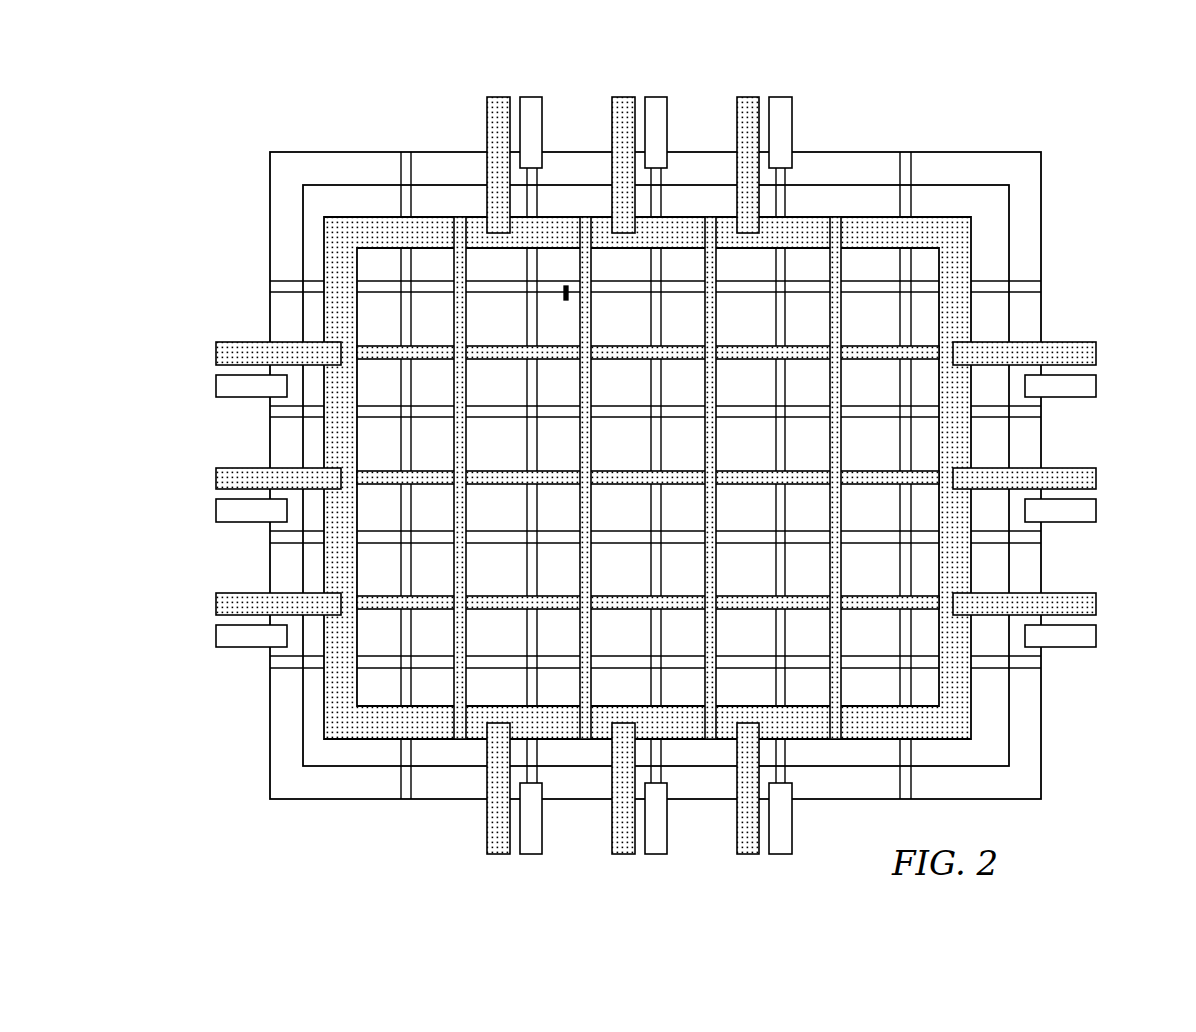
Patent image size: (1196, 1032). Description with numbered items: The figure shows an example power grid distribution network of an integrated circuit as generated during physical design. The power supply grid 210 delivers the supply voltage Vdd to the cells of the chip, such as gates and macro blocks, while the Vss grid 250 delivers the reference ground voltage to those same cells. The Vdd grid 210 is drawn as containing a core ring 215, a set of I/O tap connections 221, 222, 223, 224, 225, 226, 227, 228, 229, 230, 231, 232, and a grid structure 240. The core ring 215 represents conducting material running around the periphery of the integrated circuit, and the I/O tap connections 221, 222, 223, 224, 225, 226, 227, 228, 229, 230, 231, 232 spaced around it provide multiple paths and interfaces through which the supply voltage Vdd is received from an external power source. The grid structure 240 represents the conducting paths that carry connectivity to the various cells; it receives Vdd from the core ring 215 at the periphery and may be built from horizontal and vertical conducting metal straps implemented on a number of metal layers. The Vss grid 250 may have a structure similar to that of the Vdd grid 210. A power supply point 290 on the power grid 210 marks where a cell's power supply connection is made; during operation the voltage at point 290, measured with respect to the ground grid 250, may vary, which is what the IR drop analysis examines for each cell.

The power supply (Vdd) grid 210 is at (1045, 178).
The core ring 215 is at (270, 727).
The I/O tap connection 221 is at (532, 97).
The I/O tap connection 222 is at (656, 97).
The I/O tap connection 223 is at (782, 97).
The I/O tap connection 224 is at (1097, 384).
The I/O tap connection 225 is at (1097, 510).
The I/O tap connection 226 is at (1097, 635).
The I/O tap connection 227 is at (782, 854).
The I/O tap connection 228 is at (656, 854).
The I/O tap connection 229 is at (532, 854).
The I/O tap connection 230 is at (216, 636).
The I/O tap connection 231 is at (216, 510).
The I/O tap connection 232 is at (216, 385).
The grid structure 240 is at (537, 272).
The Vss grid 250 is at (972, 701).
The power supply point 290 is at (565, 302).